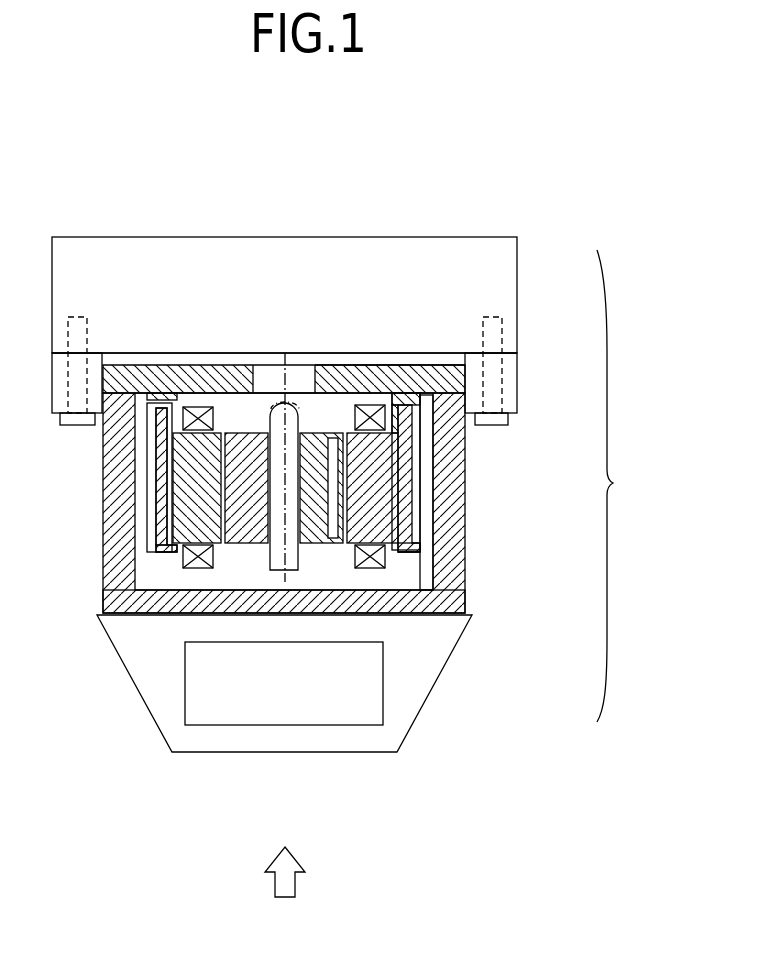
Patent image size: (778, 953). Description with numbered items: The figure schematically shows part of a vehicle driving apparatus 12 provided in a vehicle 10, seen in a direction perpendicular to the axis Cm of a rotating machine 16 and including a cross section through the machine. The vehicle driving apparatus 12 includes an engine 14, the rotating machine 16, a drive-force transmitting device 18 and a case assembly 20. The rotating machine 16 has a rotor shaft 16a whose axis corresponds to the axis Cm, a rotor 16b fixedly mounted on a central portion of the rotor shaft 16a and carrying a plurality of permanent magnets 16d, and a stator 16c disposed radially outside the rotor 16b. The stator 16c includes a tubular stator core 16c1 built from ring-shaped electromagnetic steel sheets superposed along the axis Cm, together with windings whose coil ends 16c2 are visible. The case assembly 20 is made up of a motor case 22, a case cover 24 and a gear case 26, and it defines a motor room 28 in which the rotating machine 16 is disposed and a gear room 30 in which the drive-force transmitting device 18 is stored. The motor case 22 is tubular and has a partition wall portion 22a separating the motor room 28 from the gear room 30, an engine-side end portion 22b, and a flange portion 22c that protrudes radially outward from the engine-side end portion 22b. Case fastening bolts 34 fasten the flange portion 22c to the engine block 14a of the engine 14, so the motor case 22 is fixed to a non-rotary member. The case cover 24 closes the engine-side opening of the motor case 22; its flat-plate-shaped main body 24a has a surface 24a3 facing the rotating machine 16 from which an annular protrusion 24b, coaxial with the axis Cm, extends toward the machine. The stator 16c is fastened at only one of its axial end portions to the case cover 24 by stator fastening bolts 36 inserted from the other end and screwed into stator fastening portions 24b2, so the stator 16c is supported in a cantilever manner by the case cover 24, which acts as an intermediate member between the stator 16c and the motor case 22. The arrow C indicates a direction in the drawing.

The vehicle 10 is at (485, 103).
The vehicle driving apparatus 12 is at (164, 172).
The engine 14 is at (305, 227).
The engine block 14a is at (443, 242).
The rotating machine 16 is at (131, 490).
The rotor shaft 16a is at (281, 565).
The rotor 16b is at (234, 538).
The stator 16c is at (167, 565).
The stator core 16c1 is at (183, 523).
The coil ends 16c2 is at (197, 572).
The permanent magnets 16d is at (331, 538).
The drive-force transmitting device 18 is at (215, 707).
The case assembly 20 is at (622, 486).
The motor case 22 is at (482, 534).
The partition wall portion 22a is at (402, 612).
The engine-side end portion 22b is at (438, 420).
The flange portion 22c is at (506, 398).
The case cover 24 is at (398, 352).
The main body 24a is at (432, 390).
The surface 24a3 is at (108, 430).
The protrusion 24b is at (450, 415).
The stator fastening portions 24b2 is at (445, 428).
The gear case 26 is at (443, 672).
The motor room 28 is at (416, 586).
The gear room 30 is at (426, 664).
The case fastening bolts 34 is at (508, 418).
The stator fastening bolts 36 is at (413, 551).
The axis Cm is at (307, 467).
The vibration direction C is at (285, 886).